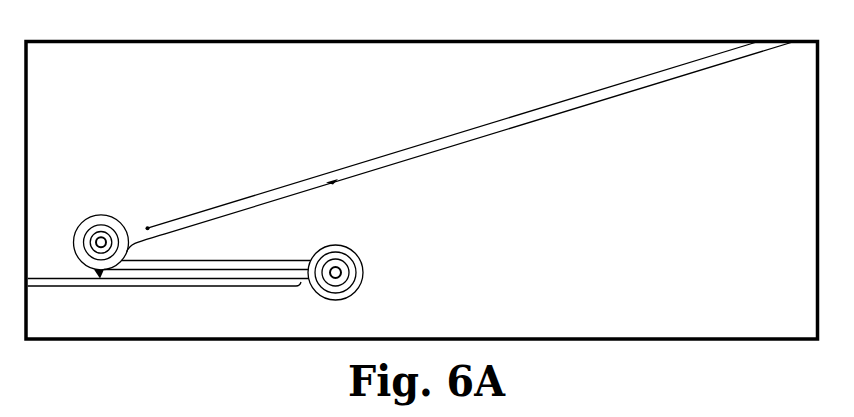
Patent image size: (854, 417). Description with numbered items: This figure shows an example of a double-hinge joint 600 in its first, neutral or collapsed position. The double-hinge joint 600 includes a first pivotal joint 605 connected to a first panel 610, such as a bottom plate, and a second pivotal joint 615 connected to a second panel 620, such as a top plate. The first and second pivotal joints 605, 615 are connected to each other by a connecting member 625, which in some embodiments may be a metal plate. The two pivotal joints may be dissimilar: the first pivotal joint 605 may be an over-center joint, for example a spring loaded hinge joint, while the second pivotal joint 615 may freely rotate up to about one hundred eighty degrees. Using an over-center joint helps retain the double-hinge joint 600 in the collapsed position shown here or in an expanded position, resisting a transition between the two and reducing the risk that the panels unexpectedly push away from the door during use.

The double-hinge joint 600 is at (403, 23).
The first pivotal joint 605 is at (362, 263).
The first panel 610 is at (244, 295).
The second pivotal joint 615 is at (82, 205).
The second panel 620 is at (366, 150).
The connecting member 625 is at (257, 251).